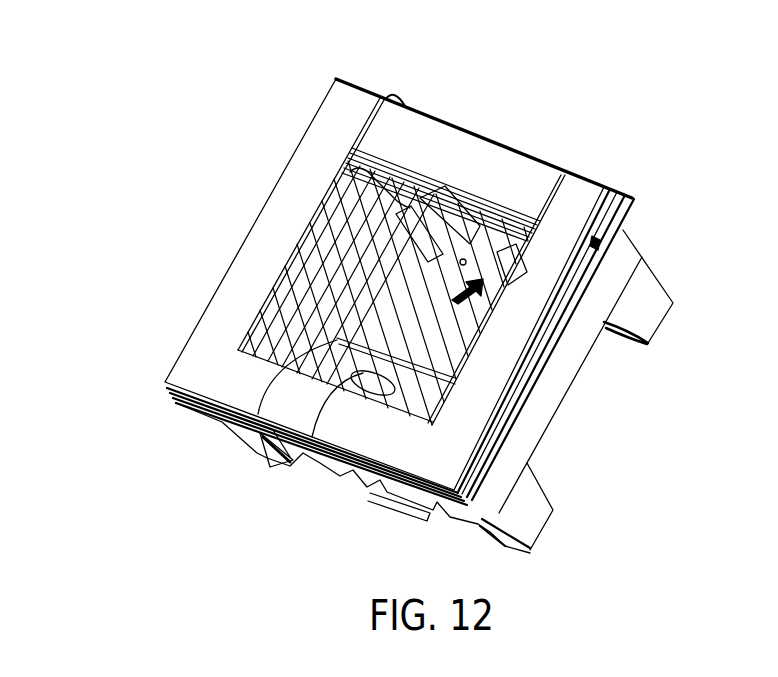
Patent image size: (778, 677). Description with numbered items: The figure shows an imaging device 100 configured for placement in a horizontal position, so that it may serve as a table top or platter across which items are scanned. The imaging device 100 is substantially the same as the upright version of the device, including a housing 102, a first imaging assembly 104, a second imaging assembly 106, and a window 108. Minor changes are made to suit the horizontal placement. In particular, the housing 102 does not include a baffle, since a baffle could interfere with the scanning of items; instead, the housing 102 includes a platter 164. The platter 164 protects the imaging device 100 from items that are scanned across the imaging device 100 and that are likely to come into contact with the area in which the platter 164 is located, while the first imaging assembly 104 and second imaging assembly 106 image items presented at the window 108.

The imaging device 100 is at (361, 316).
The housing 102 is at (597, 196).
The first imaging assembly 104 is at (443, 312).
The second imaging assembly 106 is at (282, 466).
The window 108 is at (252, 432).
The platter 164 is at (485, 362).